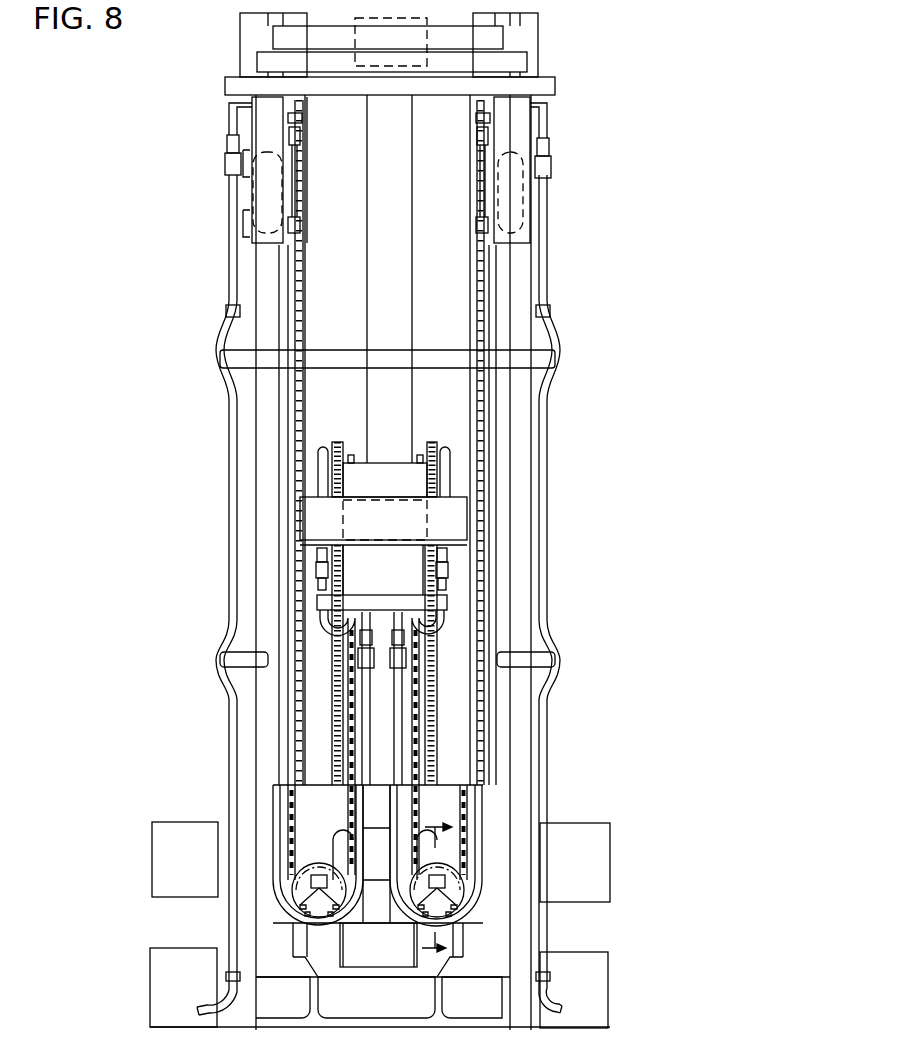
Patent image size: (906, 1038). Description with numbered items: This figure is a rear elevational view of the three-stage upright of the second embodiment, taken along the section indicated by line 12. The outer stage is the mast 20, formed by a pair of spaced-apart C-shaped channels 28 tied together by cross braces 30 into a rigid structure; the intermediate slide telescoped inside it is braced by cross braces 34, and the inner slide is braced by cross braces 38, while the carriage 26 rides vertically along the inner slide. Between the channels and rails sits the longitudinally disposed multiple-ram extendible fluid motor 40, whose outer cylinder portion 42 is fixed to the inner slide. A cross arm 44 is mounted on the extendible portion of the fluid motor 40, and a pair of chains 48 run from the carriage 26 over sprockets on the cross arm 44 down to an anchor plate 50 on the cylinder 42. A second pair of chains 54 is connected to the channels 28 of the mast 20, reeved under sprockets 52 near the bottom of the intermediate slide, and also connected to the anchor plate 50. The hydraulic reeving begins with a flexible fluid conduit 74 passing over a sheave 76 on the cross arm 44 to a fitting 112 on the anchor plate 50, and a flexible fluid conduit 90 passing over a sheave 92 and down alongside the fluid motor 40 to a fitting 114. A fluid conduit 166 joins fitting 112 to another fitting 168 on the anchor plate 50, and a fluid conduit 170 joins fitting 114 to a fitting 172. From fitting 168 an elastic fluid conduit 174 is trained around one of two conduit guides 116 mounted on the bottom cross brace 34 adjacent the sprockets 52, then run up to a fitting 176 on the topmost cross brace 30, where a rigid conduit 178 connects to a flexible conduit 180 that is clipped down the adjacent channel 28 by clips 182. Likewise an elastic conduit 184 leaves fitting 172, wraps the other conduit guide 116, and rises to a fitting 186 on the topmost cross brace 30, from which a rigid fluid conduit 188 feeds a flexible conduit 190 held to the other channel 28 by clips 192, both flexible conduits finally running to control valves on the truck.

The section line 12- 12 is at (436, 887).
The mast 20 is at (233, 63).
The carriage 26 is at (163, 846).
The C-shaped channels 28 is at (243, 412).
The cross braces 30 is at (543, 88).
The cross braces 34 is at (517, 67).
The cross braces 38 is at (493, 35).
The extendible fluid motor 40 is at (375, 278).
The outer cylinder portion 42 is at (388, 688).
The cross arm 44 is at (373, 475).
The chains 48 is at (305, 505).
The anchor plate 50 is at (430, 600).
The sprockets 52 is at (318, 858).
The chains 54 is at (292, 795).
The flexible fluid conduit 74 is at (333, 700).
The sheave 76 is at (320, 478).
The flexible fluid conduit 90 is at (490, 745).
The sheave 92 is at (437, 478).
The fitting 112 is at (318, 577).
The fitting 114 is at (446, 577).
The conduit guides 116 is at (308, 900).
The fluid conduit 166 is at (325, 620).
The fitting 168 is at (378, 610).
The fluid conduit 170 is at (440, 620).
The fitting 172 is at (390, 610).
The elastic fluid conduit 174 is at (275, 735).
The fitting 176 is at (303, 118).
The rigid conduit 178 is at (229, 118).
The flexible conduit 180 is at (231, 198).
The clips 182 is at (229, 306).
The elastic conduit 184 is at (398, 770).
The fitting 186 is at (477, 118).
The rigid fluid conduit 188 is at (550, 125).
The flexible conduit 190 is at (547, 213).
The clips 192 is at (552, 312).